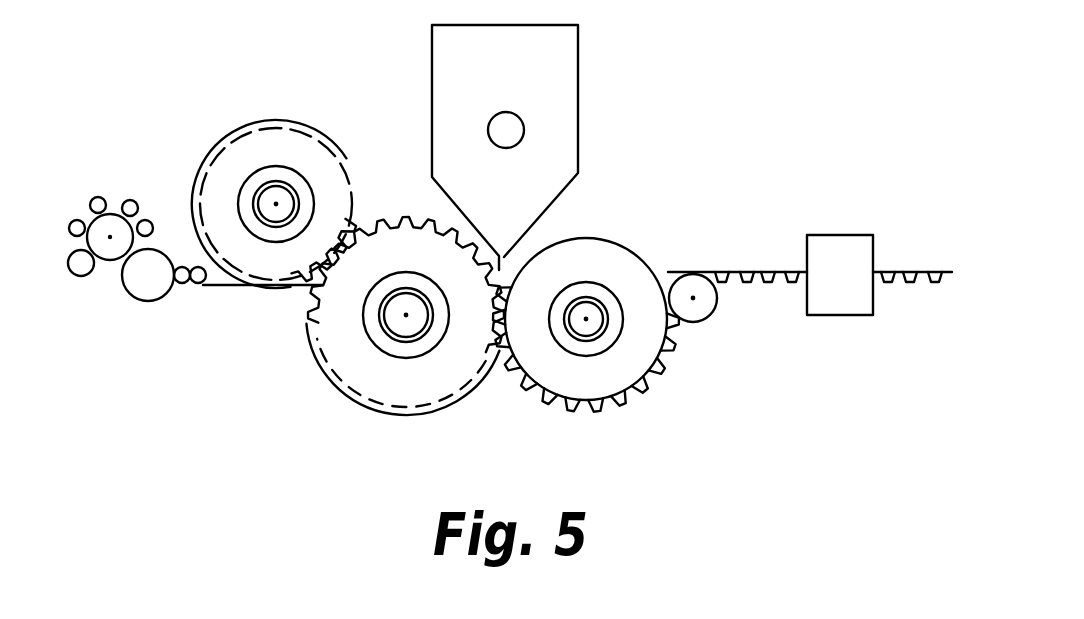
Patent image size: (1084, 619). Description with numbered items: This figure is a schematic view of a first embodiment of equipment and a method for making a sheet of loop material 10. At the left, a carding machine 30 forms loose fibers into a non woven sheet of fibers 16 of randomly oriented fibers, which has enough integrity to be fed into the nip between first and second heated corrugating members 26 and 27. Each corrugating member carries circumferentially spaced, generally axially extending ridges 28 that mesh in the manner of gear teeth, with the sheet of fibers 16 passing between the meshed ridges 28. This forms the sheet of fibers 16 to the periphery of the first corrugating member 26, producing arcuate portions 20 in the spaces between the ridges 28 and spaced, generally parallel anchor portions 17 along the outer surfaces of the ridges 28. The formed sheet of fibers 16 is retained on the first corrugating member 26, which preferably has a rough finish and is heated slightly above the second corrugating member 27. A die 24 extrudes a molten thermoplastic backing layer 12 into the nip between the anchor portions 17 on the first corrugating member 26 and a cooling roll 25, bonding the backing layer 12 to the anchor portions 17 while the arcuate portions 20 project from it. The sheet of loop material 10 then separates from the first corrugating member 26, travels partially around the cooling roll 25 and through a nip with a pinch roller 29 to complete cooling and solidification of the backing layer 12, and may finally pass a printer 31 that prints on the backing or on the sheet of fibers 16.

The sheet of loop material 10 is at (722, 256).
The backing layer 12 is at (520, 268).
The sheet of fibers 16 is at (216, 300).
The anchor portions 17 is at (412, 215).
The arcuate portions 20 is at (425, 224).
The die 24 is at (570, 155).
The cooling roll 25 is at (571, 392).
The first corrugating member 26 is at (407, 399).
The second corrugating member 27 is at (265, 140).
The ridges 28 is at (353, 213).
The pinch roller 29 is at (702, 312).
The carding machine 30 is at (113, 215).
The printer 31 is at (855, 300).